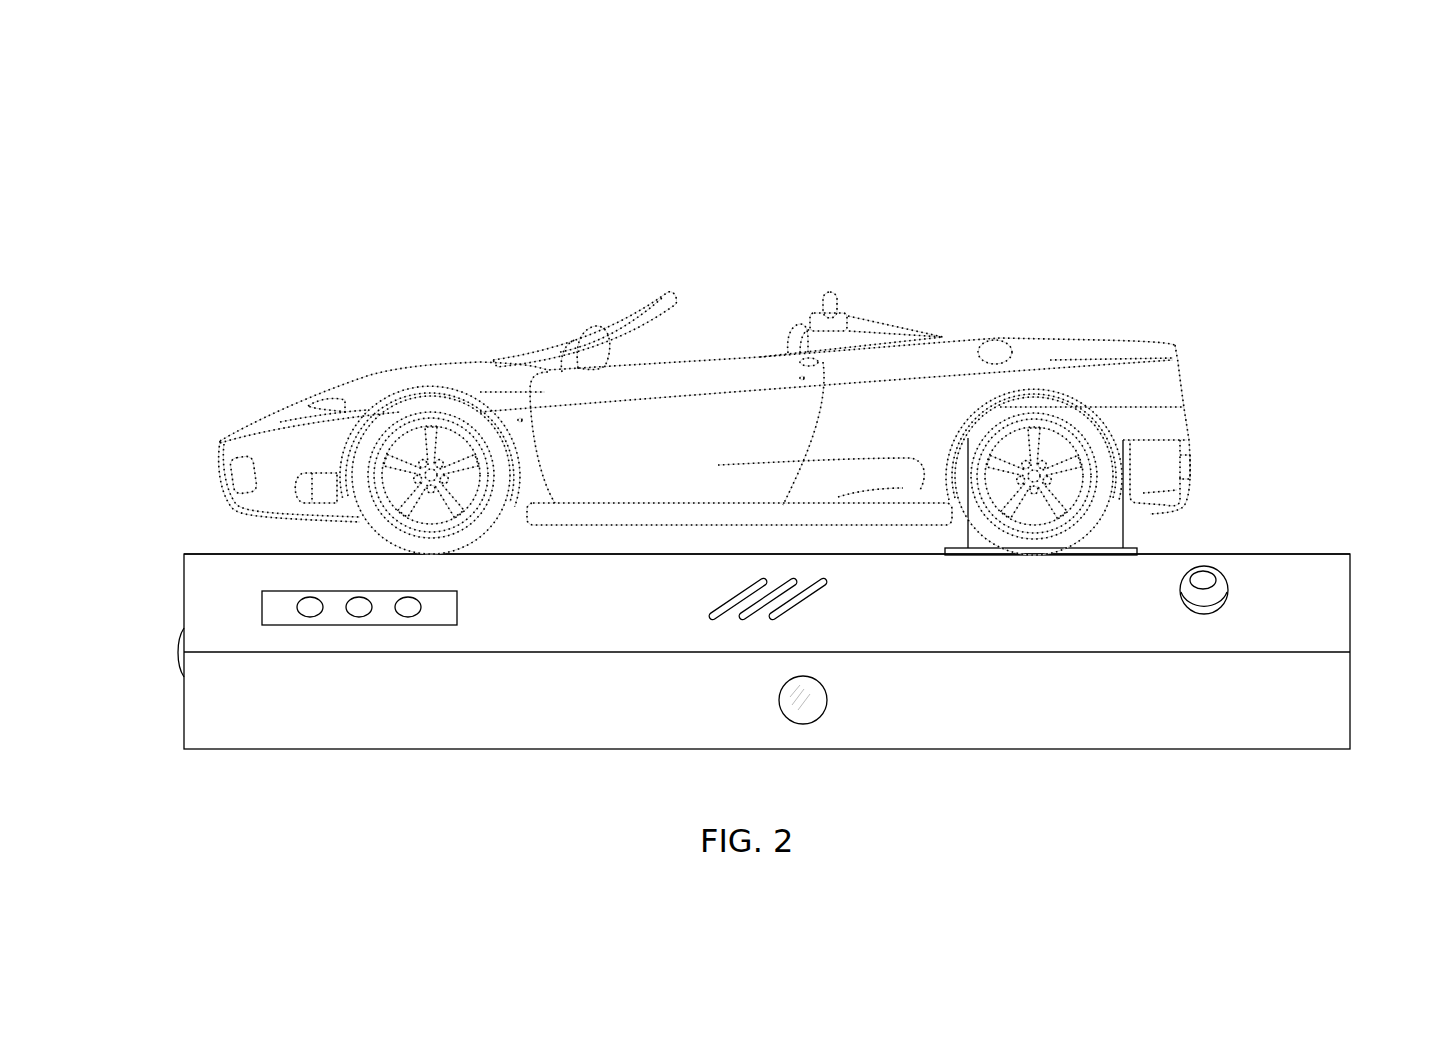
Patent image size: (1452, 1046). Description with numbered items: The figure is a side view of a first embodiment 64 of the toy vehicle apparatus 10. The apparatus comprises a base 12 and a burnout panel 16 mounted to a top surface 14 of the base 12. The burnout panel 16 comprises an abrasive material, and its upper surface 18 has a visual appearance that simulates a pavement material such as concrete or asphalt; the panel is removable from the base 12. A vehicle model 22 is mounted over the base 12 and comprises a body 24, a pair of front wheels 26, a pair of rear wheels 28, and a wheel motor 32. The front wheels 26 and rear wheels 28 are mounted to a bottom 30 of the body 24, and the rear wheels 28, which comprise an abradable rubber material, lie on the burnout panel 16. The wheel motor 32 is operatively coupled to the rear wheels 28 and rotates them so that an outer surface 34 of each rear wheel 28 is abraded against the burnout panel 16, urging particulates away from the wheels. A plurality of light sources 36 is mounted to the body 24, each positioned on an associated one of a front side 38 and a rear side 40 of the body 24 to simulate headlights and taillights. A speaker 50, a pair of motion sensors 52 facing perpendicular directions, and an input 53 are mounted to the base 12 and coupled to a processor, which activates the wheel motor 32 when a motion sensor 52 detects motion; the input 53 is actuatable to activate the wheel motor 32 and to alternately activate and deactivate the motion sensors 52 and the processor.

The toy vehicle apparatus 10 is at (1145, 212).
The base 12 is at (1292, 722).
The top surface 14 is at (1330, 557).
The burnout panel 16 is at (1120, 552).
The upper surface 18 is at (1117, 552).
The vehicle model 22 is at (388, 330).
The body 24 is at (732, 407).
The front wheels 26 is at (410, 468).
The rear wheels 28 is at (1063, 433).
The bottom 30 is at (652, 527).
The wheel motor 32 is at (982, 535).
The outer surface 34 is at (1093, 423).
The light sources 36 is at (308, 405).
The front side 38 is at (220, 447).
The rear side 40 is at (1187, 418).
The speaker 50 is at (734, 622).
The motion sensors 52 is at (182, 652).
The input 53 is at (355, 665).
The first embodiment 64 is at (130, 285).